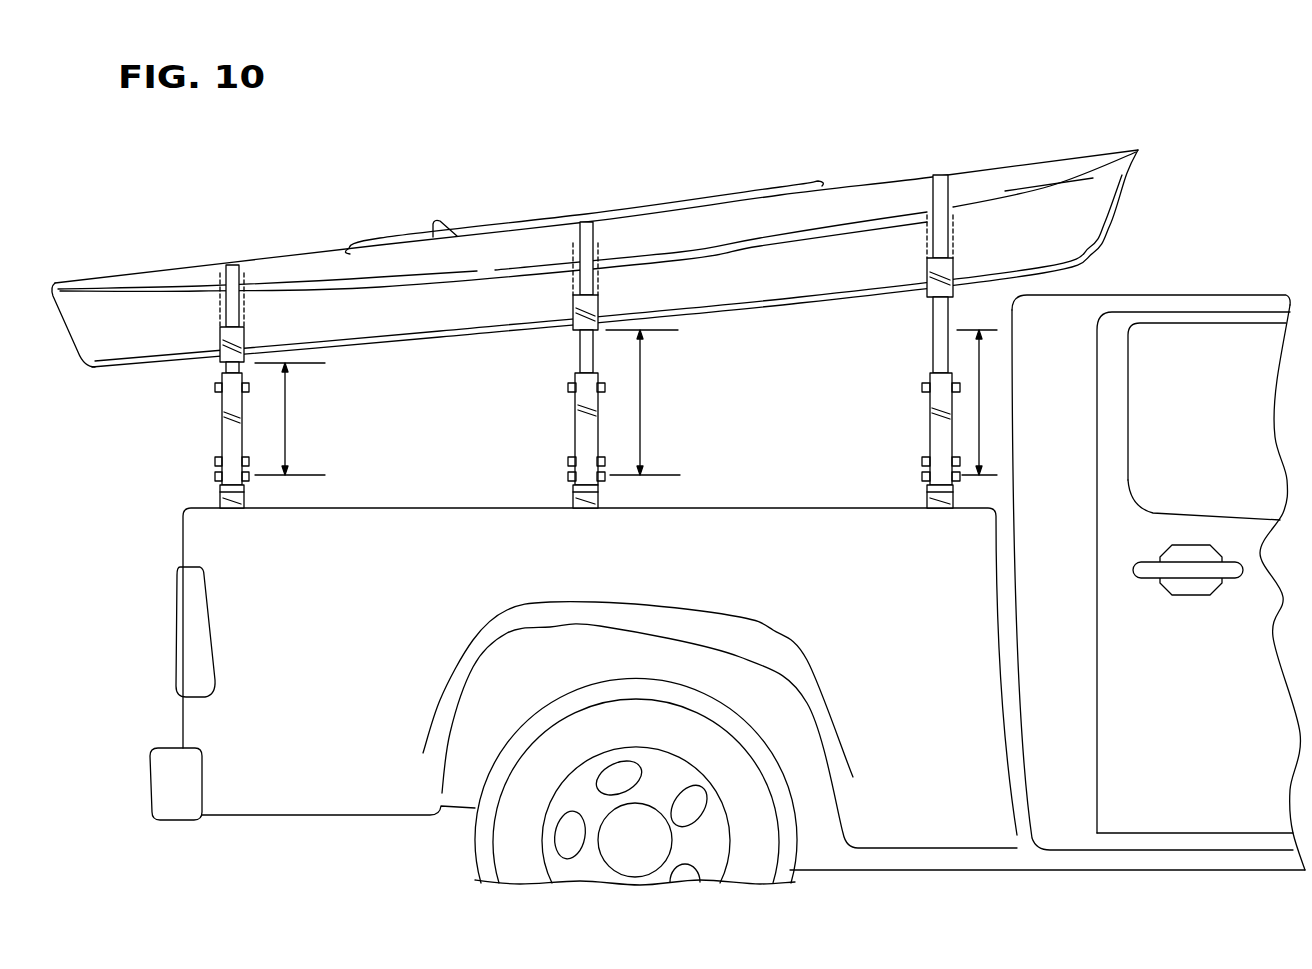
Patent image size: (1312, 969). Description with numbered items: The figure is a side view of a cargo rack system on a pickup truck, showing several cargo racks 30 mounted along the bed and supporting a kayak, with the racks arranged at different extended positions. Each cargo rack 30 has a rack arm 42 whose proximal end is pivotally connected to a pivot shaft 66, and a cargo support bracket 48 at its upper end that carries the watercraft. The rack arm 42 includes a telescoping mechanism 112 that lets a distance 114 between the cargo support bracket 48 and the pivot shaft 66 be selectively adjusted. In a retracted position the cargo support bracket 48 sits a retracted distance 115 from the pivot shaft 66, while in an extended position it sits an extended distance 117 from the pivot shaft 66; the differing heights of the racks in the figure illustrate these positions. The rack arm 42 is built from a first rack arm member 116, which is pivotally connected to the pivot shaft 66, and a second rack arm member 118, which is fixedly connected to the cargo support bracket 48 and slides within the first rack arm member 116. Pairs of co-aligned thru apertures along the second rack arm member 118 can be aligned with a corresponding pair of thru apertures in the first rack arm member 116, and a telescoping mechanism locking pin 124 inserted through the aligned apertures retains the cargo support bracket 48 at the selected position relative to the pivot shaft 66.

The cargo rack 30 is at (538, 341).
The rack arm 42 is at (599, 443).
The cargo support bracket 48 is at (600, 305).
The pivot shaft 66 is at (572, 478).
The telescoping mechanism 112 is at (566, 386).
The distance 114 is at (641, 405).
The retracted distance 115 is at (286, 415).
The first rack arm member 116 is at (575, 432).
The extended distance 117 is at (980, 398).
The second rack arm member 118 is at (578, 350).
The telescoping mechanism locking pin 124 is at (615, 365).